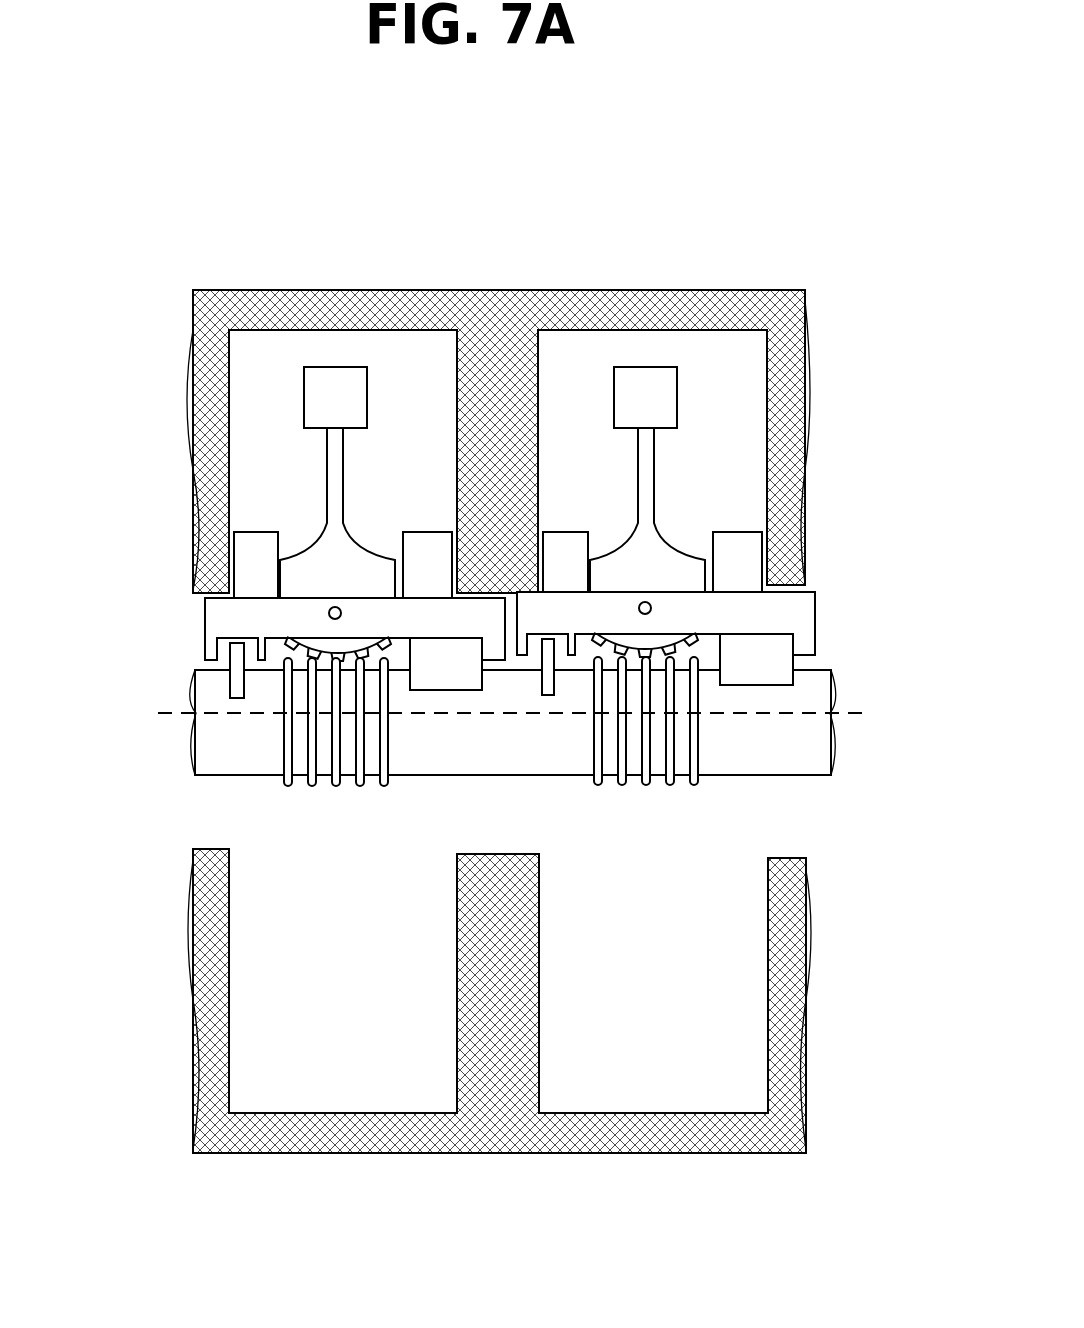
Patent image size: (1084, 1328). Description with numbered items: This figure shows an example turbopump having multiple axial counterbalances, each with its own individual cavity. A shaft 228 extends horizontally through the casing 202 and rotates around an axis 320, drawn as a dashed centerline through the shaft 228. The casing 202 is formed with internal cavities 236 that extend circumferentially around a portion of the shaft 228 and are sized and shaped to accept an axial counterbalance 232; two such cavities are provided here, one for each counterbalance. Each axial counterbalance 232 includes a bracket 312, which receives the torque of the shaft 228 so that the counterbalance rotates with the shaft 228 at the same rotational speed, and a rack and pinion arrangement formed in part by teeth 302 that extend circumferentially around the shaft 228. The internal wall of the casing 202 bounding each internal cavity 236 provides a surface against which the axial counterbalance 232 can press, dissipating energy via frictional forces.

The casing 202 is at (183, 486).
The shaft 228 is at (423, 775).
The axial counterbalance 232 is at (182, 615).
The internal cavity 236 is at (635, 1072).
The teeth 302 is at (312, 787).
The bracket 312 is at (205, 634).
The axis 320 is at (166, 714).